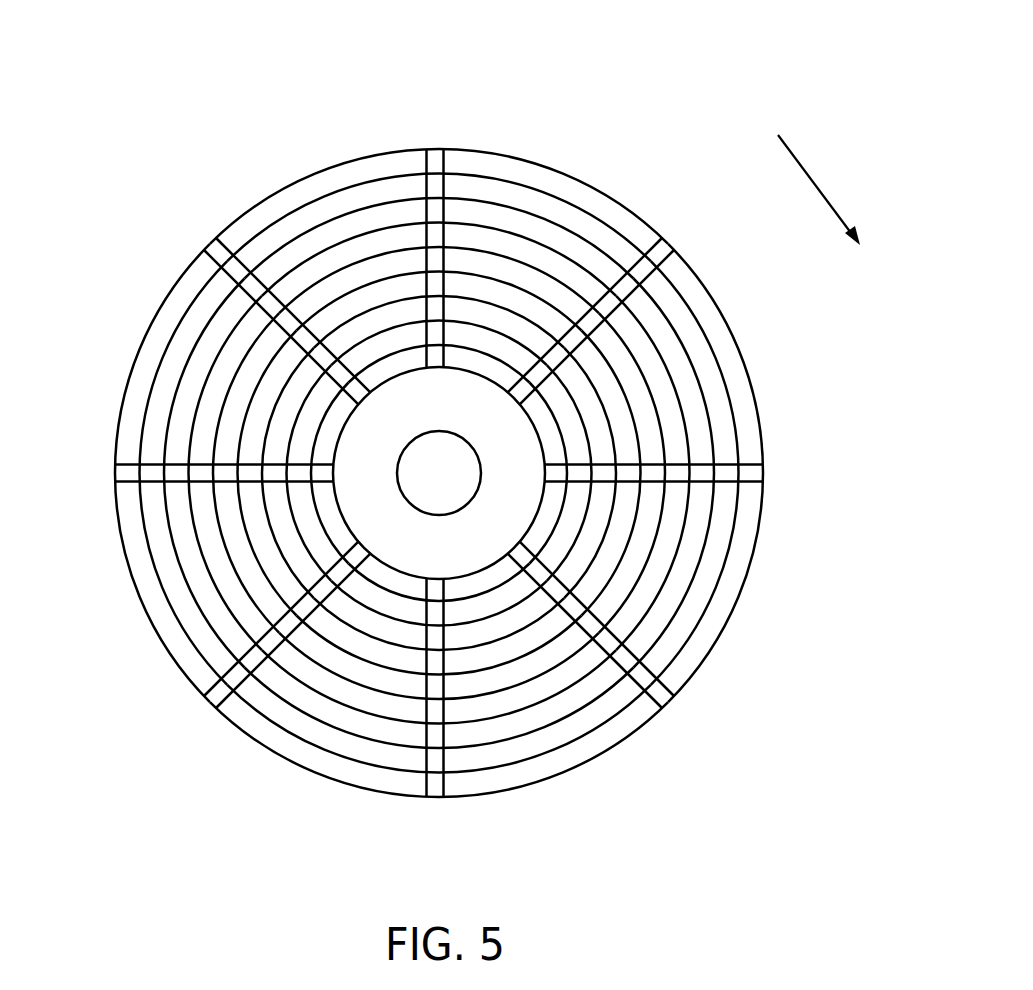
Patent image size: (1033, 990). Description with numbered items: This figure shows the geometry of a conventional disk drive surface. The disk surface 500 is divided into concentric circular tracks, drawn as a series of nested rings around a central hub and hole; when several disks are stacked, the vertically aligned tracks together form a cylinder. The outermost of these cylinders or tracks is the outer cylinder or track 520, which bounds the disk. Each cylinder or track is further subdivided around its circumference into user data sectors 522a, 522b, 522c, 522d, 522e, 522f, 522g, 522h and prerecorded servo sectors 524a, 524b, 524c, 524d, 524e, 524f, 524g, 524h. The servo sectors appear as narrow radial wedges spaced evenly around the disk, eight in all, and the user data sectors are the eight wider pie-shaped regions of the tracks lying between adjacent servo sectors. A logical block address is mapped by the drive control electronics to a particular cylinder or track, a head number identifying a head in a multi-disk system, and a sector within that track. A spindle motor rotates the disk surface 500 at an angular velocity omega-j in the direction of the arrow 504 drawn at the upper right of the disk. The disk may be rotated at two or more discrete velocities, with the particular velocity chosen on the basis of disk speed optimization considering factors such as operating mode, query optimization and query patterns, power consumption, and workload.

The disk surface 500 is at (223, 83).
The arrow 504 is at (815, 173).
The outer cylinder or track 520 is at (498, 162).
The user data sector 522a is at (583, 195).
The user data sector 522b is at (732, 355).
The user data sector 522c is at (740, 585).
The user data sector 522d is at (570, 750).
The user data sector 522e is at (305, 760).
The user data sector 522f is at (138, 572).
The user data sector 522g is at (140, 353).
The user data sector 522h is at (315, 185).
The prerecorded servo sector 524a is at (435, 147).
The prerecorded servo sector 524b is at (660, 244).
The prerecorded servo sector 524c is at (756, 472).
The prerecorded servo sector 524d is at (663, 702).
The prerecorded servo sector 524e is at (433, 790).
The prerecorded servo sector 524f is at (213, 693).
The prerecorded servo sector 524g is at (120, 463).
The prerecorded servo sector 524h is at (210, 252).